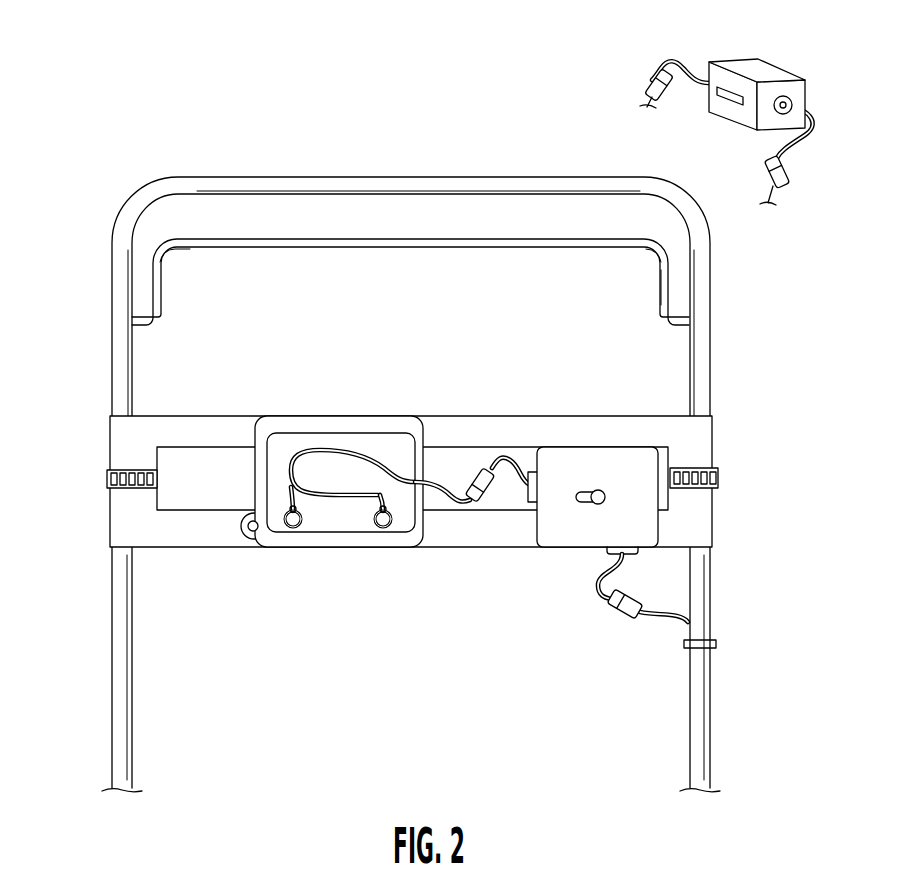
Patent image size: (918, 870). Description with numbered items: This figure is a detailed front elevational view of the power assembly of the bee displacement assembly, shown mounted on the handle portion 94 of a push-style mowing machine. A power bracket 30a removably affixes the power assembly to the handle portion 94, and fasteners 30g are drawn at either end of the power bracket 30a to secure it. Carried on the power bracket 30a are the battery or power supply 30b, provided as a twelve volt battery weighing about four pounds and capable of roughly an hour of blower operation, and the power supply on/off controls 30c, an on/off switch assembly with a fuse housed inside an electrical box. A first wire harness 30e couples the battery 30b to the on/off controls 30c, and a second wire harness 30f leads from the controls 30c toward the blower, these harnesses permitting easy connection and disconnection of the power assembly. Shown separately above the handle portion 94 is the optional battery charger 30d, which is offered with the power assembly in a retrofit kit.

The handle portion of mowing machine 94 is at (697, 323).
The power bracket 30a is at (698, 453).
The battery or power supply 30b is at (378, 442).
The power supply on/off controls 30c is at (630, 467).
The battery charger 30d is at (765, 70).
The first wire harness 30e is at (490, 510).
The second wire harness 30f is at (620, 625).
The fastener 30g is at (105, 478).